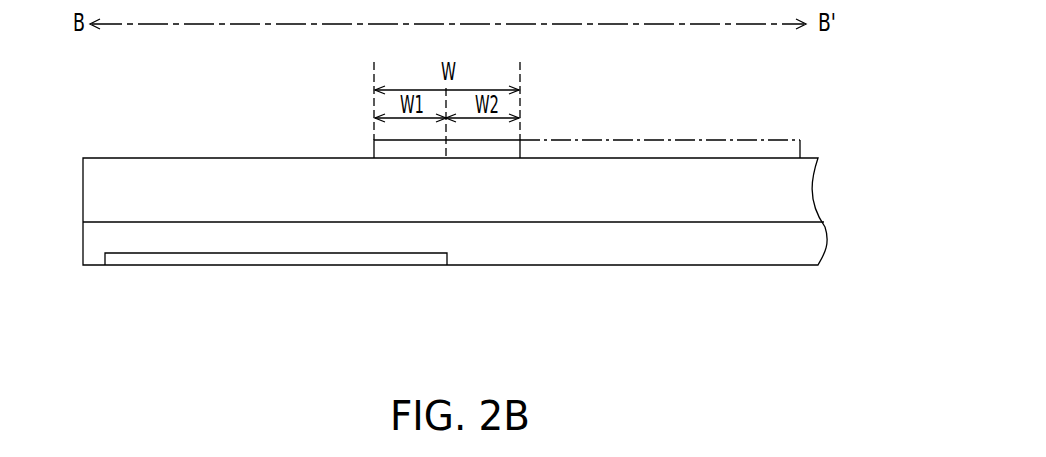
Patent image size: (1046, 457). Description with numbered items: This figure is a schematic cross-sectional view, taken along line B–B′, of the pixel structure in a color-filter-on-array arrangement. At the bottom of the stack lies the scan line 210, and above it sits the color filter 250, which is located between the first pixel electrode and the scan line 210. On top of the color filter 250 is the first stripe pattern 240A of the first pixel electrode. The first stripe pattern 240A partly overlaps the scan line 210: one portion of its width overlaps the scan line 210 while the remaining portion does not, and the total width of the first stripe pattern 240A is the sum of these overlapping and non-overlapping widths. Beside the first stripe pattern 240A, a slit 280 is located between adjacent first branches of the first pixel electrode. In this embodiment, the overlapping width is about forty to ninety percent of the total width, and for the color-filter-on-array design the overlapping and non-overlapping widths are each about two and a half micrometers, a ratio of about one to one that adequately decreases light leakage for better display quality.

The scan line 210 is at (285, 258).
The first stripe pattern 240A is at (505, 146).
The color filter 250 is at (768, 180).
The slit 280 is at (690, 140).